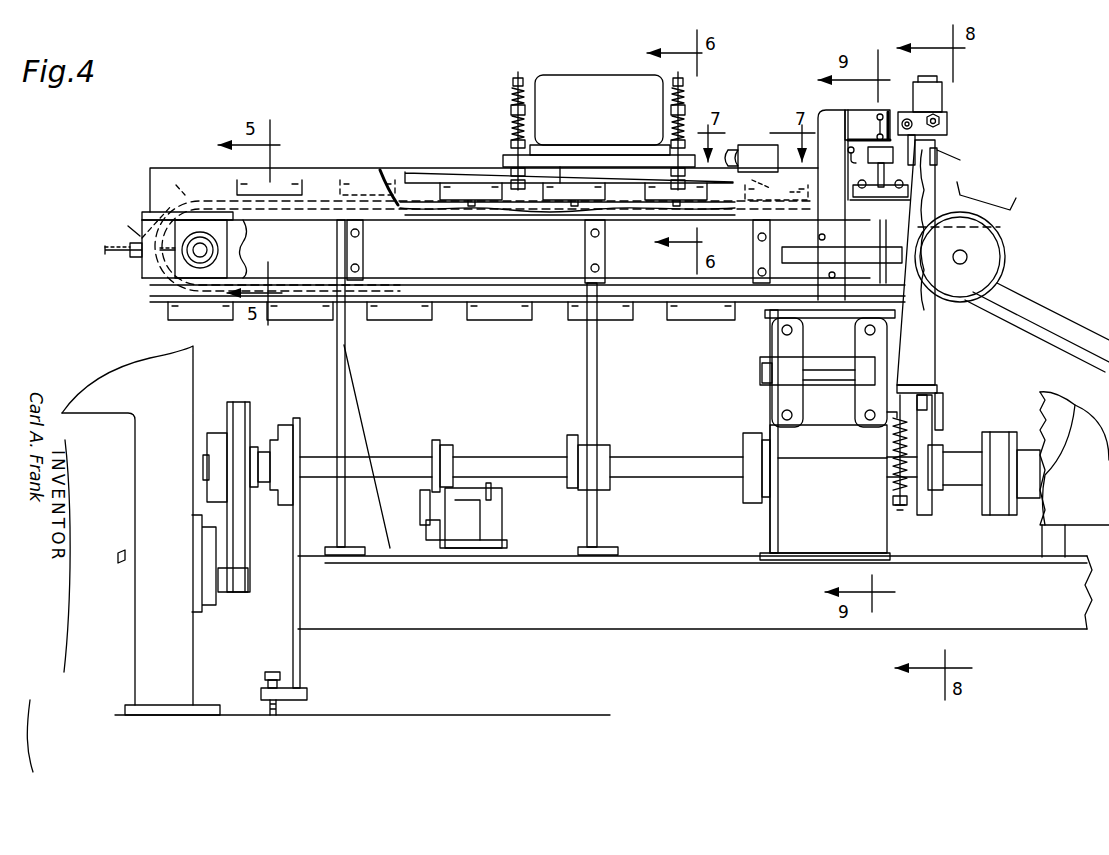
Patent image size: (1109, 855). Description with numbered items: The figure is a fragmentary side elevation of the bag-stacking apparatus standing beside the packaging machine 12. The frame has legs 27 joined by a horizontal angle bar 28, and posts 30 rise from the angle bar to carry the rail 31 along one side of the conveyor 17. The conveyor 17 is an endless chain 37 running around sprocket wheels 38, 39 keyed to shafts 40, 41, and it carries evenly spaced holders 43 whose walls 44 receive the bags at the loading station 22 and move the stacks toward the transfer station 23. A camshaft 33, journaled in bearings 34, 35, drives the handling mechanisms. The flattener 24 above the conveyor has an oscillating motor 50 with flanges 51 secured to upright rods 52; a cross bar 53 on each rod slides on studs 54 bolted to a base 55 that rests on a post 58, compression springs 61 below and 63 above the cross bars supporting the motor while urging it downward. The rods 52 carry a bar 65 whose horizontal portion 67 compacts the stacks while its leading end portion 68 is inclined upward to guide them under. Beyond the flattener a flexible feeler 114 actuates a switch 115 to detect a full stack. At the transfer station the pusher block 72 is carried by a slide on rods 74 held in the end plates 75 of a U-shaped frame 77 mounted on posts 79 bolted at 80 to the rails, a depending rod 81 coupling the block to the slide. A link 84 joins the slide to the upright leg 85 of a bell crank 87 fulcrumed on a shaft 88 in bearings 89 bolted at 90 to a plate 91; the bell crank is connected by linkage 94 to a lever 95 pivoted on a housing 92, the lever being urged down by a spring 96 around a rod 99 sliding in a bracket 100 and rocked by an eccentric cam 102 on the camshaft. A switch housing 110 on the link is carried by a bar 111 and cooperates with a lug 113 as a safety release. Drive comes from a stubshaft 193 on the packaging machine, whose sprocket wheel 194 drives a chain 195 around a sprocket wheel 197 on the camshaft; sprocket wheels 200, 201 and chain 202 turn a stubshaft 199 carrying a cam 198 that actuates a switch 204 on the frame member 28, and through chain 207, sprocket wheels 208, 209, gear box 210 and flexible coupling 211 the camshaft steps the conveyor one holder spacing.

The packaging machine 12 is at (100, 388).
The conveyor 17 is at (425, 212).
The conveyor frame 22 is at (296, 170).
The transfer station 23 is at (870, 60).
The flattener 24 is at (535, 60).
The legs 27 is at (300, 652).
The horizontal angle bar 28 is at (722, 629).
The posts 30 is at (337, 372).
The horizontal rail 31 is at (447, 302).
The camshaft 33 is at (660, 458).
The bearing 34 is at (273, 438).
The bearing 35 is at (750, 448).
The endless chain 37 is at (462, 215).
The sprocket wheel 38 is at (250, 242).
The sprocket wheel 39 is at (905, 255).
The shaft 40 is at (195, 260).
The sprocket shaft 41 is at (958, 262).
The holders 43 is at (392, 188).
The side walls of the holders 44 is at (345, 178).
The oscillating motor 50 is at (580, 84).
The flanges 51 is at (520, 134).
The upright rods 52 is at (597, 190).
The cross bar 53 is at (510, 108).
The upright stud 54 is at (512, 80).
The base 55 is at (503, 160).
The post 58 is at (585, 252).
The helical compression springs 61 is at (511, 120).
The compression springs 63 is at (510, 90).
The bar 65 is at (563, 168).
The horizontal portion of the bar 67 is at (472, 193).
The leading end portion of the bar 68 is at (432, 172).
The pusher block 72 is at (930, 160).
The parallel rods 74 is at (882, 116).
The end plates 75 is at (872, 122).
The U-shaped frame 77 is at (847, 112).
The vertical posts 79 is at (818, 237).
The bolts 80 is at (828, 275).
The depending rod 81 is at (878, 176).
The link 84 is at (940, 124).
The upright leg 85 is at (938, 156).
The bell crank 87 is at (936, 345).
The shaft 88 is at (828, 372).
The bearings 89 is at (768, 372).
The bolts 90 is at (782, 332).
The plate 91 is at (820, 410).
The housing 92 is at (778, 518).
The linkage 94 is at (928, 400).
The lever 95 is at (943, 420).
The coiled compression spring 96 is at (893, 468).
The rod 99 is at (893, 508).
The bracket 100 is at (893, 442).
The eccentric cam 102 is at (932, 440).
The switch housing 110 is at (942, 96).
The bar 111 is at (916, 146).
The lug 113 is at (947, 118).
The flexible feeler 114 is at (772, 200).
The switch 115 is at (750, 145).
The stubshaft 193 is at (120, 552).
The smaller sprocket wheel 194 is at (242, 592).
The endless chain 195 is at (240, 528).
The sprocket wheel 197 is at (228, 410).
The cam 198 is at (492, 490).
The stubshaft 199 is at (420, 510).
The sprocket wheel 200 is at (428, 530).
The sprocket wheel 201 is at (448, 452).
The endless chain 202 is at (432, 456).
The switch 204 is at (502, 520).
The endless chain 207 is at (1068, 320).
The sprocket wheel 208 is at (1046, 398).
The sprocket wheel 209 is at (1010, 268).
The gear box 210 is at (1052, 400).
The flexible coupling 211 is at (990, 515).